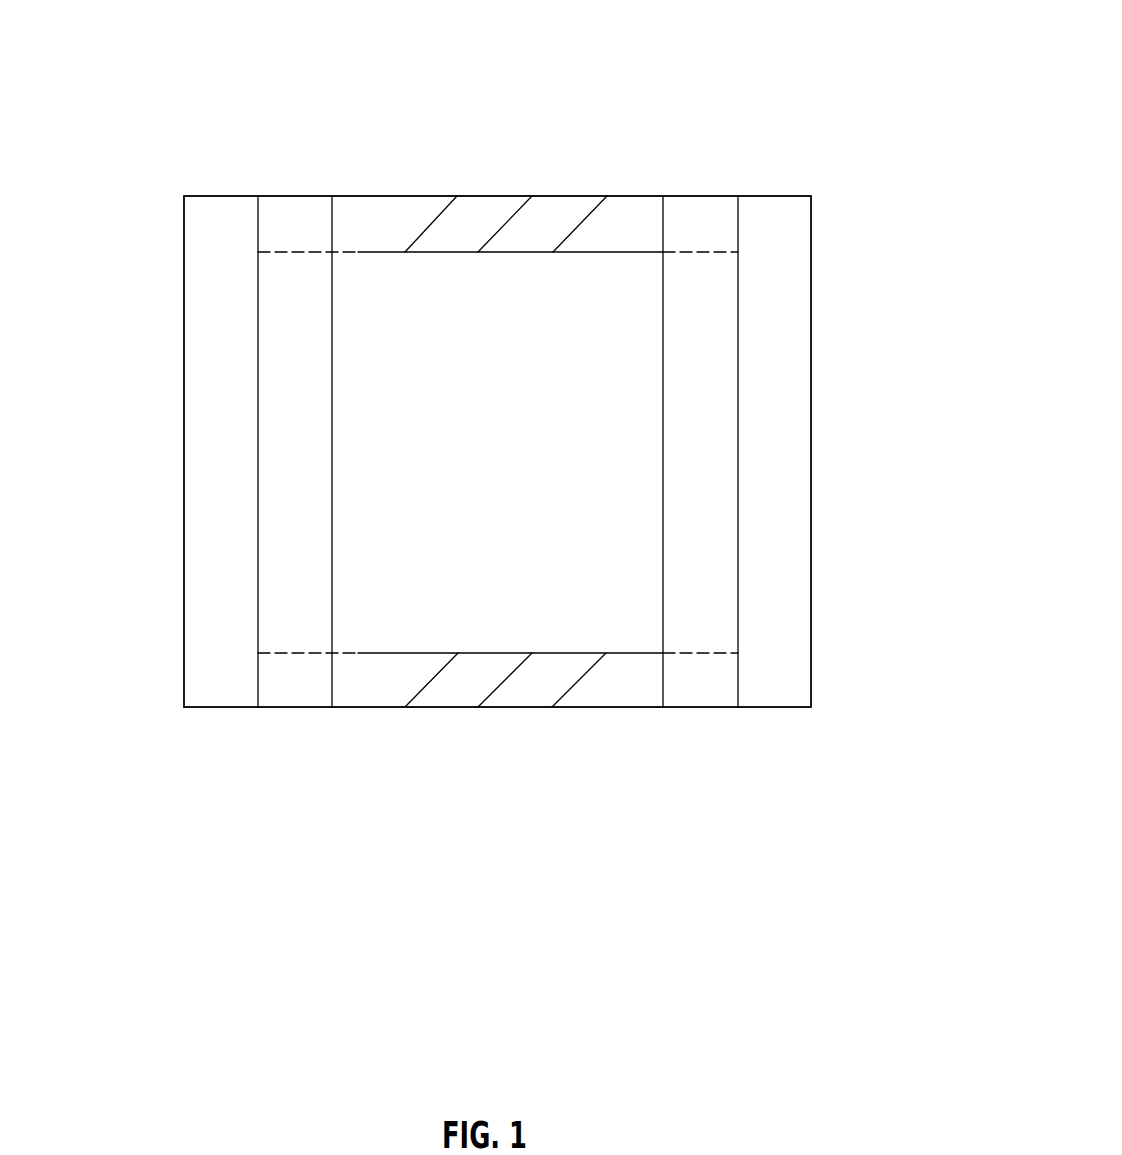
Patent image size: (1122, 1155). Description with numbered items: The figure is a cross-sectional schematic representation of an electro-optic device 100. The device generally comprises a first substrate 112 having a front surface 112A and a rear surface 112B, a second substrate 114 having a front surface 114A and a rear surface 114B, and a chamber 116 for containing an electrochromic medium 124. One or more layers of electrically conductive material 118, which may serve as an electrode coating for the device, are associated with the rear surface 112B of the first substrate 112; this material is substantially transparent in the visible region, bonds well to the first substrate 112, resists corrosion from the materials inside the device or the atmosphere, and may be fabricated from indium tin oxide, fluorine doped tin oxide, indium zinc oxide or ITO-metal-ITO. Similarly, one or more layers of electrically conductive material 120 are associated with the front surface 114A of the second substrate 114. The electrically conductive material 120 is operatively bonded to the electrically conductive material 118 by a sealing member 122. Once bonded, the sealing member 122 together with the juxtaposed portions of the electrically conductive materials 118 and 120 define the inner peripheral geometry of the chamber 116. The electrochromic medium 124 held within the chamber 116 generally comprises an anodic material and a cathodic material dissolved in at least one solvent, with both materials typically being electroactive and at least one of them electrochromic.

The electro-optic device 100 is at (723, 137).
The first substrate 112 is at (211, 502).
The front surface 112A is at (184, 378).
The rear surface 112B is at (258, 293).
The second substrate 114 is at (797, 502).
The front surface 114A is at (738, 293).
The rear surface 114B is at (811, 378).
The chamber 116 is at (514, 453).
The electrically conductive material 118 is at (292, 620).
The electrically conductive material 120 is at (705, 622).
The sealing member 122 is at (415, 215).
The electrochromic medium 124 is at (590, 607).